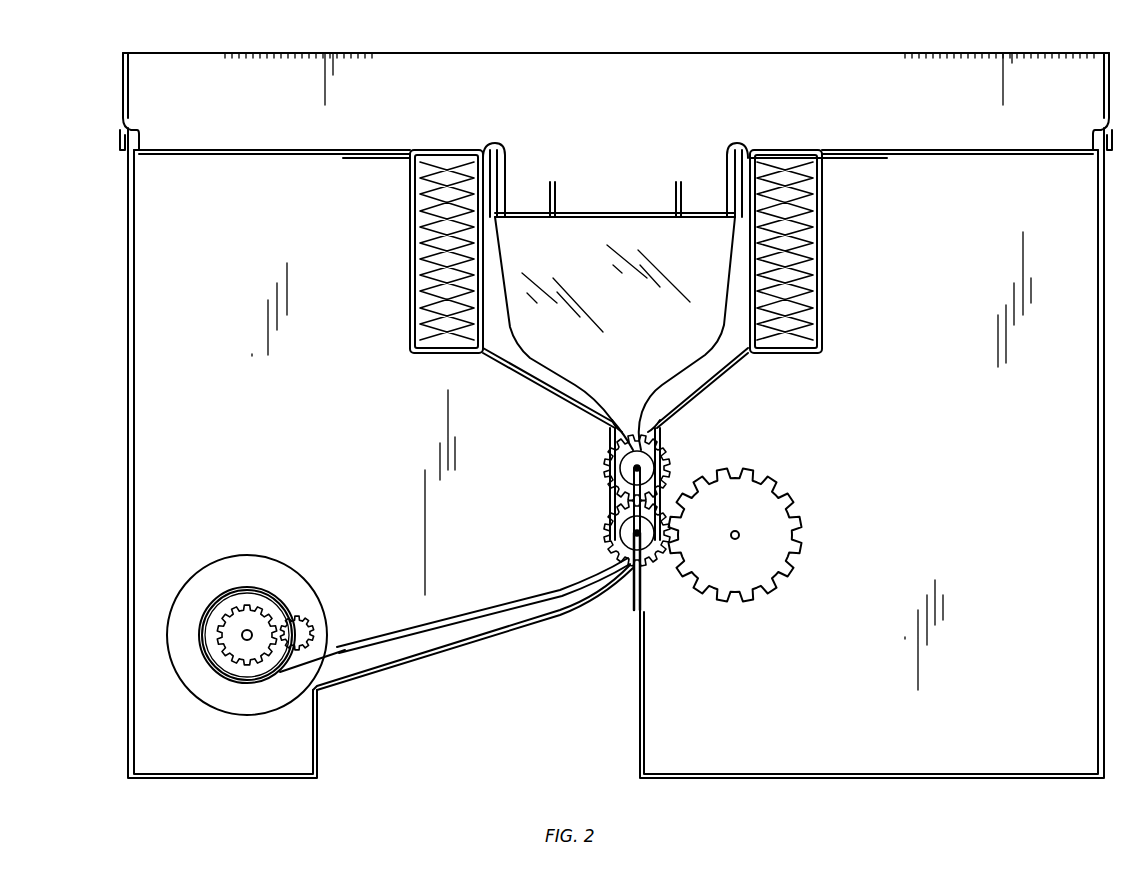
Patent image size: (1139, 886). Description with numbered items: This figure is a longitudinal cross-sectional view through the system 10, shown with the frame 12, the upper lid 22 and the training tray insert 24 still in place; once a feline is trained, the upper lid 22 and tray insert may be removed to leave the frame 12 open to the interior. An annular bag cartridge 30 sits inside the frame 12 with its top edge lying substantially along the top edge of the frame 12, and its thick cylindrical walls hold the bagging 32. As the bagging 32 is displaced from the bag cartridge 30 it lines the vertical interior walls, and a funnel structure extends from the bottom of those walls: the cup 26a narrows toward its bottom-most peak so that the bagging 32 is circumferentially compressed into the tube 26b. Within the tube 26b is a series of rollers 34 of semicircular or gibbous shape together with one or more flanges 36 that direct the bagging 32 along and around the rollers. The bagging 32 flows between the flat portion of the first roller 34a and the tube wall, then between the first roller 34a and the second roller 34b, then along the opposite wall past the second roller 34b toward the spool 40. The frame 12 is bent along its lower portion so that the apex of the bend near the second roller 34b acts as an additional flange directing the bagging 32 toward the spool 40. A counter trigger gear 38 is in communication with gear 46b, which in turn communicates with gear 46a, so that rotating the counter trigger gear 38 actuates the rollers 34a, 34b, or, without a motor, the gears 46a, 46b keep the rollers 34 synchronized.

The system 10 is at (788, 30).
The frame 12 is at (130, 416).
The upper lid 22 is at (425, 52).
The training tray insert 24 is at (613, 217).
The cup of the funnel structure 26a is at (535, 378).
The tube of the funnel structure 26b is at (668, 498).
The bag cartridge 30 is at (430, 270).
The bagging 32 is at (443, 218).
The series of rollers 34 is at (533, 433).
The first roller 34a is at (612, 478).
The second roller 34b is at (612, 540).
The flange 36 is at (660, 428).
The counter trigger gear 38 is at (798, 500).
The spool 40 is at (314, 571).
The gear 46a is at (655, 462).
The gear 46b is at (660, 575).